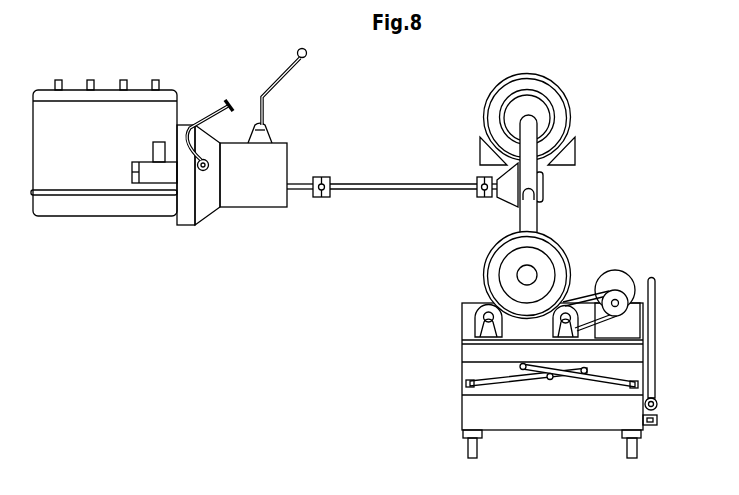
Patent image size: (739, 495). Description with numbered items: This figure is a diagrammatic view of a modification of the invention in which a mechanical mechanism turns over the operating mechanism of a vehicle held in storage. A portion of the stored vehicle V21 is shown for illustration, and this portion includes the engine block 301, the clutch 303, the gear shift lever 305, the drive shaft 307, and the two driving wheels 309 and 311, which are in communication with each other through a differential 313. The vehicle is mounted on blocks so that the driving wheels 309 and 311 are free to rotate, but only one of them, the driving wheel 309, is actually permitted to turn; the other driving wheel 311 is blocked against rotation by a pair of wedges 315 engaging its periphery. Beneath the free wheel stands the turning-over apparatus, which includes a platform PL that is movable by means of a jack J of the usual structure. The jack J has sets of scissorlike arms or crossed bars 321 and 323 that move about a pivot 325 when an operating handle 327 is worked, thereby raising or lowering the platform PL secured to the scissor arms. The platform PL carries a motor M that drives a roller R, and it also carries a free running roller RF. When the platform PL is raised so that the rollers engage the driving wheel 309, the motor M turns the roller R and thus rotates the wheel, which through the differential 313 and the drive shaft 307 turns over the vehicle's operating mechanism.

The engine block 301 is at (110, 168).
The clutch 303 is at (210, 129).
The gear shift lever 305 is at (294, 66).
The drive shaft 307 is at (392, 184).
The driving wheel 309 is at (546, 234).
The driving wheel 311 is at (549, 85).
The differential 313 is at (543, 184).
The wedges 315 is at (573, 152).
The scissor arm 321 is at (500, 386).
The scissor arm 323 is at (592, 386).
The pivot 325 is at (546, 386).
The operating handle 327 is at (656, 340).
The vehicle V21 is at (262, 241).
The roller R is at (573, 297).
The free running roller RF is at (480, 300).
The platform PL is at (466, 322).
The motor M is at (611, 274).
The jack J is at (675, 391).